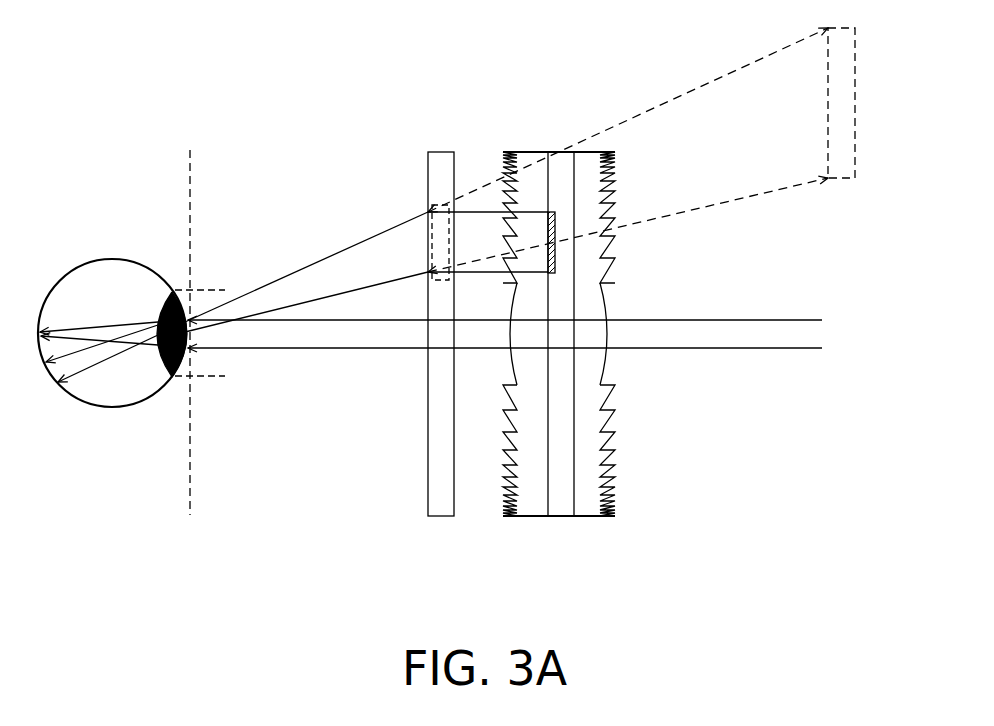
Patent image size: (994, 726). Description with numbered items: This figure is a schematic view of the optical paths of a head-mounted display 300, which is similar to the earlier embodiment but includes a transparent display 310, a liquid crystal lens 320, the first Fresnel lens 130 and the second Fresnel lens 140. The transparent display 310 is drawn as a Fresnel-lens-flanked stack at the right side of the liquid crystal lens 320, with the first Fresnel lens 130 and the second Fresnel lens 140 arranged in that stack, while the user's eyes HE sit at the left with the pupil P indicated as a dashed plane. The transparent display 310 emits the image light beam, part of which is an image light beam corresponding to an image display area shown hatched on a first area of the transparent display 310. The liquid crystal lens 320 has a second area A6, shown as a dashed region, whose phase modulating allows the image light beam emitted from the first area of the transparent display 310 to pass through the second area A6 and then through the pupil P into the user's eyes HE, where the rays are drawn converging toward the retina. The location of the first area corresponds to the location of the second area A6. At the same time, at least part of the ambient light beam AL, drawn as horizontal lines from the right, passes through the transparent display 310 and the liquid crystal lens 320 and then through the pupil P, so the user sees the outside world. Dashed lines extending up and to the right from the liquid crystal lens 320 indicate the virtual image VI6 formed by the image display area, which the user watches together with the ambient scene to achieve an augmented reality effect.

The user's eyes HE is at (112, 393).
The pupil P is at (188, 470).
The ambient light beam AL is at (795, 368).
The liquid crystal lens 320 is at (437, 492).
The second area A6 is at (440, 200).
The first Fresnel lens 130 is at (602, 151).
The second Fresnel lens 140 is at (535, 493).
The transparent display 310 is at (565, 477).
The virtual image VI6 is at (855, 135).
The head-mounted display 300 is at (655, 545).